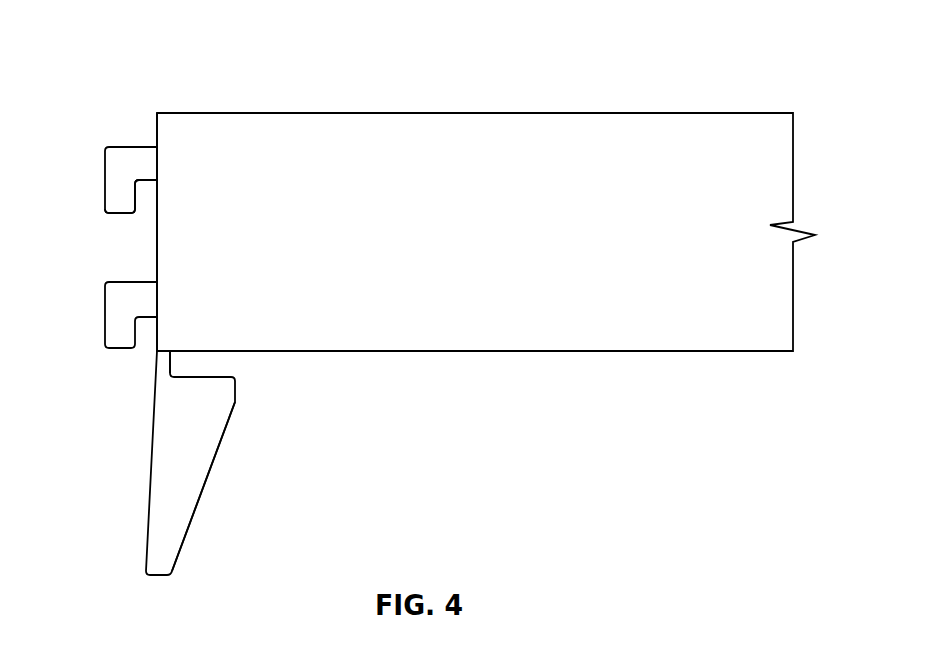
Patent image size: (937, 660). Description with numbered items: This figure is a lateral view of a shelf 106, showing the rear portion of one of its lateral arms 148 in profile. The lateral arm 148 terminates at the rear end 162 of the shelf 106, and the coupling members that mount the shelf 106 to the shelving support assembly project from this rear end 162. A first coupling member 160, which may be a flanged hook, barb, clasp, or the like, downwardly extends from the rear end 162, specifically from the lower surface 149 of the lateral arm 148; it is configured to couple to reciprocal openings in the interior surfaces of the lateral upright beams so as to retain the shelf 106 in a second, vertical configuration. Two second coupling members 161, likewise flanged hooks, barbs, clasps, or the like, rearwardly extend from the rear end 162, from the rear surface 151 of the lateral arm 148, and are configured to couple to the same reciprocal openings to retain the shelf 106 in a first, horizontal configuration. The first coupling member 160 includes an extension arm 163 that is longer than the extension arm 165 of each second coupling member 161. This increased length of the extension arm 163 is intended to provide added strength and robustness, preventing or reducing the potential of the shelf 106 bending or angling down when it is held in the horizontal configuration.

The shelf 106 is at (668, 92).
The lateral arm 148 is at (282, 152).
The lower surface 149 is at (158, 360).
The rear surface 151 is at (157, 240).
The first coupling member 160 is at (148, 523).
The second coupling member 161 is at (115, 197).
The rear end 162 is at (208, 112).
The extension arm 163 is at (190, 440).
The extension arm 165 is at (128, 162).